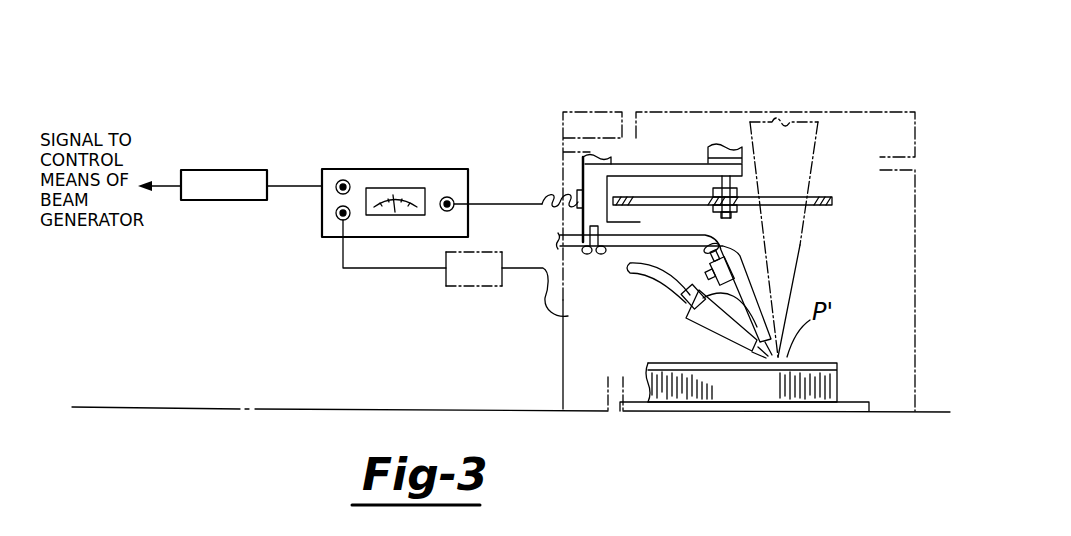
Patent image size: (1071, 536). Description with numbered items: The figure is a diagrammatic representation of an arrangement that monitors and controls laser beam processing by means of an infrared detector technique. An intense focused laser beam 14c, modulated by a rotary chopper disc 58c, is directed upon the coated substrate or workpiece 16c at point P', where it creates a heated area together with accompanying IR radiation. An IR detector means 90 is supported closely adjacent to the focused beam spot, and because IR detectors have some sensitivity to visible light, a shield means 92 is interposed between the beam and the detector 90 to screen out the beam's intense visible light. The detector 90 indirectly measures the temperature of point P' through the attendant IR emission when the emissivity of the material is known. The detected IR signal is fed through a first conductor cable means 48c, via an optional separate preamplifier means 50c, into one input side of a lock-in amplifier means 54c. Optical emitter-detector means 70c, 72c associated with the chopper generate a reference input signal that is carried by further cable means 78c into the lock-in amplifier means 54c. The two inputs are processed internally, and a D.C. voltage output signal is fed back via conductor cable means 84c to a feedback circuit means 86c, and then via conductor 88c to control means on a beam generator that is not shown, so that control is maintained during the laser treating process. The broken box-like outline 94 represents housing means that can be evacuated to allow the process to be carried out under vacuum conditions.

The focused laser beam 14c is at (797, 257).
The workpiece 16c is at (835, 380).
The first conductor cable means 48c is at (650, 272).
The preamplifier means 50c is at (450, 287).
The lock-in amplifier means 54c is at (392, 169).
The rotary chopper disc 58c is at (815, 197).
The optical emitter-detector means 70c is at (630, 187).
The optical emitter-detector means 72c is at (640, 222).
The further cable means 78c is at (530, 168).
The conductor cable means 84c is at (286, 186).
The feedback circuit means 86c is at (224, 186).
The conductor 88c is at (163, 185).
The IR detector means 90 is at (728, 332).
The shield means 92 is at (690, 318).
The housing means 94 is at (560, 345).